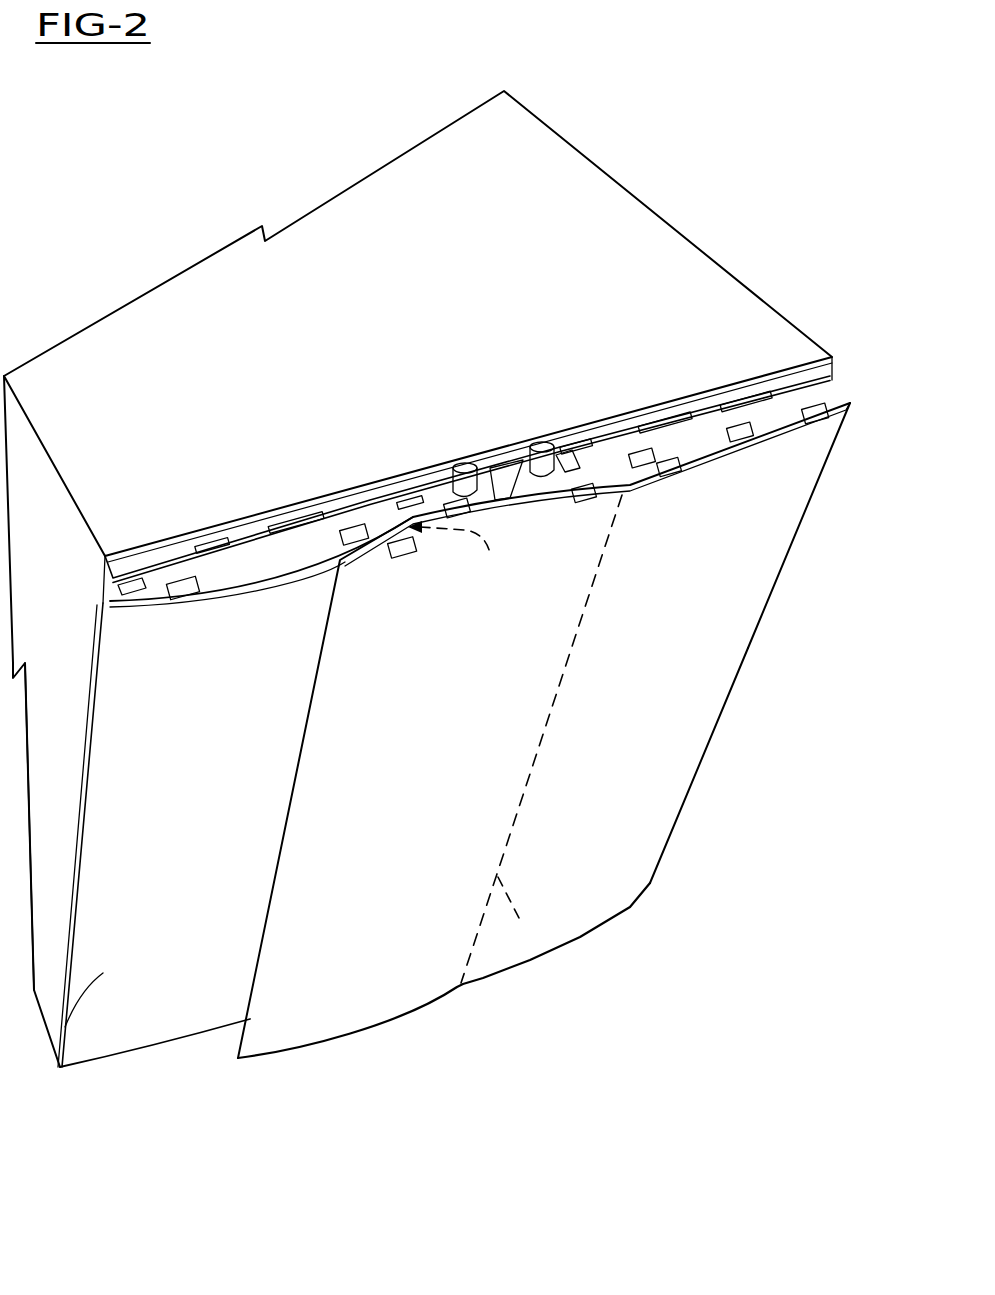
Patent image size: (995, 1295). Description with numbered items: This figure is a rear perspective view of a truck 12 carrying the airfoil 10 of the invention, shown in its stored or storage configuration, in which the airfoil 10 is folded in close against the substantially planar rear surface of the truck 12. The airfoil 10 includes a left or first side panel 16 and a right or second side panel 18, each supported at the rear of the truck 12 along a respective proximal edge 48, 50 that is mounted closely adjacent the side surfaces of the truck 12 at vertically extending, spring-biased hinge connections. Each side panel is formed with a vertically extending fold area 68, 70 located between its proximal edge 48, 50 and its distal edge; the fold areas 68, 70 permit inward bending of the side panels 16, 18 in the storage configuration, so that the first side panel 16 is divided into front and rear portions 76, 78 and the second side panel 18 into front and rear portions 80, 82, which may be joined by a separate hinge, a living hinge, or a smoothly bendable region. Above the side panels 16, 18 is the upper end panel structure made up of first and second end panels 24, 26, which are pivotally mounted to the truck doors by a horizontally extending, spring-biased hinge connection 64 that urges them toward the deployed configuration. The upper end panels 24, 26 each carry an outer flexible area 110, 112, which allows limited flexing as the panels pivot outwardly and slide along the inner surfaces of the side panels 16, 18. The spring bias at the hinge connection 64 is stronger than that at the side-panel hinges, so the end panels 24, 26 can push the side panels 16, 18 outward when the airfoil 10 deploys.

The airfoil 10 is at (658, 893).
The truck 12 is at (710, 273).
The first side panel 16 is at (170, 1018).
The second side panel 18 is at (544, 758).
The first end panel 24 is at (217, 575).
The second end panel 26 is at (748, 428).
The proximal edge 48 is at (83, 730).
The proximal edge 50 is at (717, 650).
The hinge connection 64 is at (380, 505).
The fold area 68 is at (464, 554).
The fold area 70 is at (520, 920).
The front portion 76 is at (60, 1040).
The rear portion 78 is at (428, 545).
The front portion 80 is at (676, 772).
The rear portion 82 is at (367, 1003).
The outer flexible area 110 is at (133, 587).
The outer flexible area 112 is at (790, 412).